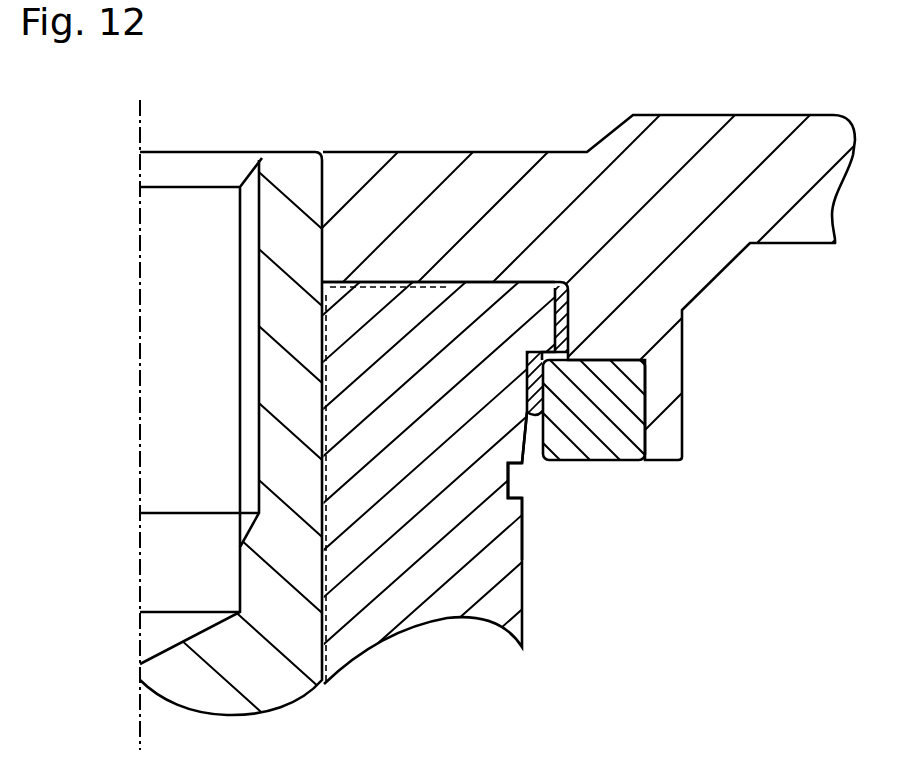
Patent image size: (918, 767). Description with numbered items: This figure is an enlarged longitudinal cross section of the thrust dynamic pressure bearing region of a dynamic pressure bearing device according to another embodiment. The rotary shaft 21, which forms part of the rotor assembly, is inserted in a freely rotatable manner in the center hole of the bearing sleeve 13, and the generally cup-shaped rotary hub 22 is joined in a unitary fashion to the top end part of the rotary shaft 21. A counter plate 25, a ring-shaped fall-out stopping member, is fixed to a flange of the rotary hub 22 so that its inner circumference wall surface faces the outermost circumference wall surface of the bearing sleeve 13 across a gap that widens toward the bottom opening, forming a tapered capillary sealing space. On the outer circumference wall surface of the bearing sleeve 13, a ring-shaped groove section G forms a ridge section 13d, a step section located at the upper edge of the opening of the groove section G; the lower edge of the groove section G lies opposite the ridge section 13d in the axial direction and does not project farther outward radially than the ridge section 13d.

The bearing sleeve 13 is at (522, 583).
The ridge section 13d is at (512, 453).
The rotary shaft 21 is at (288, 148).
The rotary hub 22 is at (488, 147).
The counter plate 25 is at (613, 450).
The groove section G is at (518, 480).